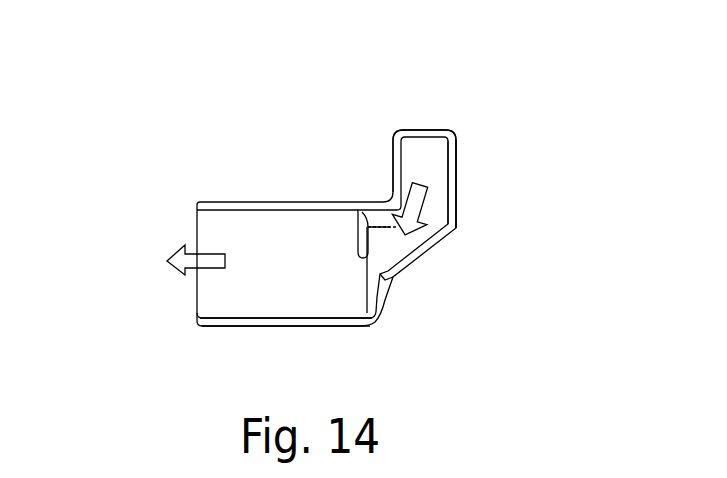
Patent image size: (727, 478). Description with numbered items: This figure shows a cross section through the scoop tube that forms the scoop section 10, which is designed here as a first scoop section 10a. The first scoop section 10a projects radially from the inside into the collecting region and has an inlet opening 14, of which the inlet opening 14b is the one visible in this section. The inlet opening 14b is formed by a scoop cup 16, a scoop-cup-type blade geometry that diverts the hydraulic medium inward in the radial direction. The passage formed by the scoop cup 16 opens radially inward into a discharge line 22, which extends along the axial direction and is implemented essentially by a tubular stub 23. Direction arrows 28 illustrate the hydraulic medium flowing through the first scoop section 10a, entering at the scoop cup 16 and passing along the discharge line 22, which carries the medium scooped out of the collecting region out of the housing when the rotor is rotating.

The scoop section 10 is at (354, 240).
The first scoop section 10a is at (354, 240).
The inlet opening 14 is at (529, 184).
The inlet opening 14b is at (452, 159).
The scoop cup 16 is at (505, 149).
The discharge line 22 is at (253, 363).
The tubular stub 23 is at (227, 327).
The direction arrows 28 is at (417, 202).